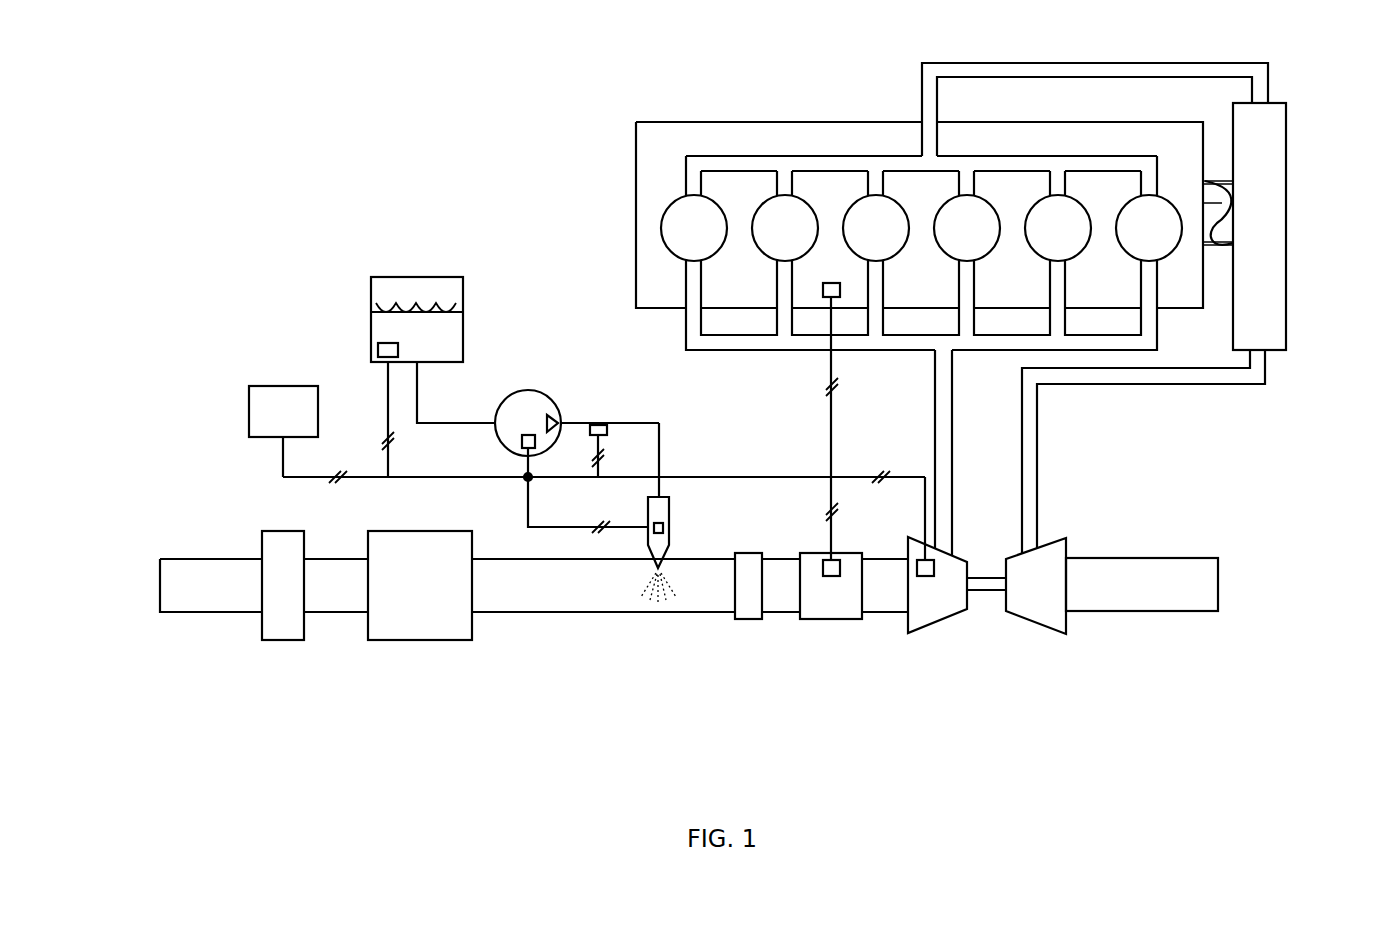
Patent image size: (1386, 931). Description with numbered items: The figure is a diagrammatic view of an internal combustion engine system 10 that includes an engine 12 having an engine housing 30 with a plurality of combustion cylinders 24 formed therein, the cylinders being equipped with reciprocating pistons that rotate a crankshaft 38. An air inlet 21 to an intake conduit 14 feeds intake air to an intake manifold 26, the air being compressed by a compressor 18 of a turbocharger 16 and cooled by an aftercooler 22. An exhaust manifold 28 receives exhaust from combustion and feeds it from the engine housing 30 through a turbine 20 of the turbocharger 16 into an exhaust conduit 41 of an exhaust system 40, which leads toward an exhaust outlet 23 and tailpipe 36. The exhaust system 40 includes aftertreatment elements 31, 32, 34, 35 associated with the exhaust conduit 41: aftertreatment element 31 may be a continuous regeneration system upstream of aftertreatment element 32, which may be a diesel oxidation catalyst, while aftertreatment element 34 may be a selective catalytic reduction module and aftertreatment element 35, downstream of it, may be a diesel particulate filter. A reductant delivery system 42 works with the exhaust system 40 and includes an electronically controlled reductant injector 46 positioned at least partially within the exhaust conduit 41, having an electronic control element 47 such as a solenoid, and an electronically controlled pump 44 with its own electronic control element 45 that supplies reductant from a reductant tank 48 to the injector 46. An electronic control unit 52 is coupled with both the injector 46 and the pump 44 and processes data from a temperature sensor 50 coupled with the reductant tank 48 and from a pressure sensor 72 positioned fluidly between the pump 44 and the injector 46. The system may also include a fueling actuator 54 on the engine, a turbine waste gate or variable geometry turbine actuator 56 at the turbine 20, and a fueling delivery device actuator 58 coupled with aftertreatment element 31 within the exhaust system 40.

The internal combustion engine system 10 is at (378, 128).
The engine 12 is at (592, 251).
The intake conduit 14 is at (1037, 440).
The turbocharger 16 is at (993, 652).
The compressor 18 is at (1040, 625).
The turbine 20 is at (940, 623).
The air inlet 21 is at (1218, 580).
The aftercooler 22 is at (1286, 200).
The exhaust outlet 23 is at (160, 580).
The combustion cylinders 24 is at (666, 245).
The intake manifold 26 is at (822, 156).
The exhaust manifold 28 is at (738, 351).
The engine housing 30 is at (640, 122).
The aftertreatment element 31 is at (832, 620).
The aftertreatment element 32 is at (745, 620).
The aftertreatment element 34 is at (413, 641).
The aftertreatment element 35 is at (283, 641).
The tailpipe 36 is at (215, 614).
The crankshaft 38 is at (1220, 249).
The exhaust system 40 is at (562, 652).
The exhaust conduit 41 is at (600, 614).
The reductant delivery system 42 is at (343, 493).
The electronically controlled pump 44 is at (507, 398).
The electronic control element 45 is at (522, 441).
The electronically controlled reductant injector 46 is at (663, 528).
The electronic control element 47 is at (669, 500).
The reductant tank 48 is at (371, 283).
The temperature sensor 50 is at (378, 348).
The electronic control unit 52 is at (249, 393).
The fueling actuator 54 is at (830, 283).
The turbine waste gate or variable geometry turbine actuator 56 is at (934, 568).
The fueling delivery device actuator 58 is at (840, 568).
The pressure sensor 72 is at (606, 425).